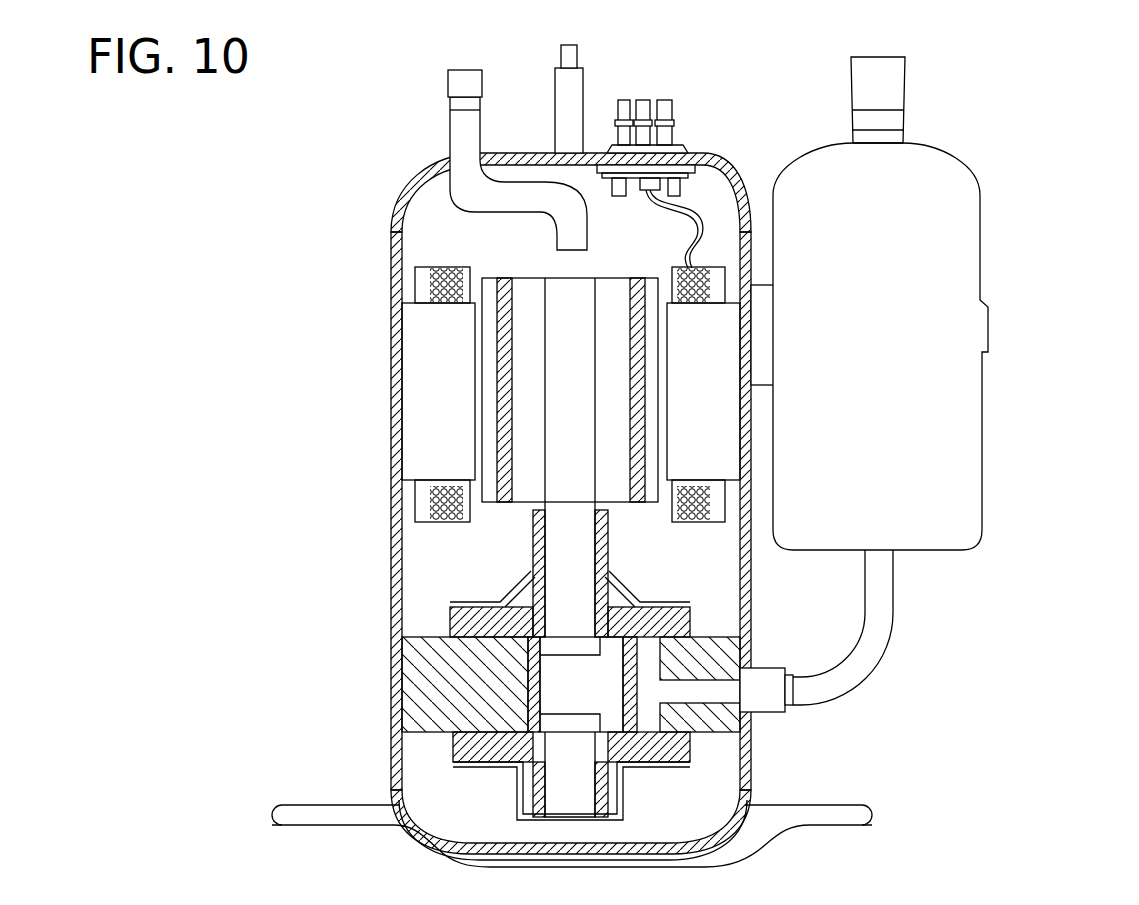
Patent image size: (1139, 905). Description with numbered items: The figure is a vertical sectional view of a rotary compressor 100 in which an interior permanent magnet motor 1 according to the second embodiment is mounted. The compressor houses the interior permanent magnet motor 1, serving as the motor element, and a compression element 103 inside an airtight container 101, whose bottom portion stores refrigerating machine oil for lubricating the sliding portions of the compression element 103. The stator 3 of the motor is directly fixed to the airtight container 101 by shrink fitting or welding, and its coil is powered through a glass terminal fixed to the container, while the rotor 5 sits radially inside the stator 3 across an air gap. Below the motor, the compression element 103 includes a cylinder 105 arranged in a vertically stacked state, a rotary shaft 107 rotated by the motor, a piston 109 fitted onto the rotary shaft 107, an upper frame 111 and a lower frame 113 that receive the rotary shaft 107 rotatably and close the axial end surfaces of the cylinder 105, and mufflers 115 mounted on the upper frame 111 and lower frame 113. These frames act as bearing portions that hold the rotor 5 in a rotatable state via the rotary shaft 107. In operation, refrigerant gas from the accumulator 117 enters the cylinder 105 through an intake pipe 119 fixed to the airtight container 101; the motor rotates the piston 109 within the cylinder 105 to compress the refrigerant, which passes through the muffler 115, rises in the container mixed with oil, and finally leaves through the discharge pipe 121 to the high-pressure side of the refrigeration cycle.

The rotary compressor 100 is at (115, 143).
The interior permanent magnet motor 1 is at (426, 243).
The stator 3 is at (384, 334).
The rotor 5 is at (483, 424).
The airtight container 101 is at (400, 164).
The compression element 103 is at (412, 767).
The cylinder 105 is at (425, 638).
The rotary shaft 107 is at (562, 566).
The piston 109 is at (527, 681).
The upper frame 111 is at (640, 618).
The lower frame 113 is at (675, 750).
The muffler 115 is at (510, 598).
The accumulator 117 is at (982, 272).
The intake pipe 119 is at (893, 640).
The discharge pipe 121 is at (450, 137).